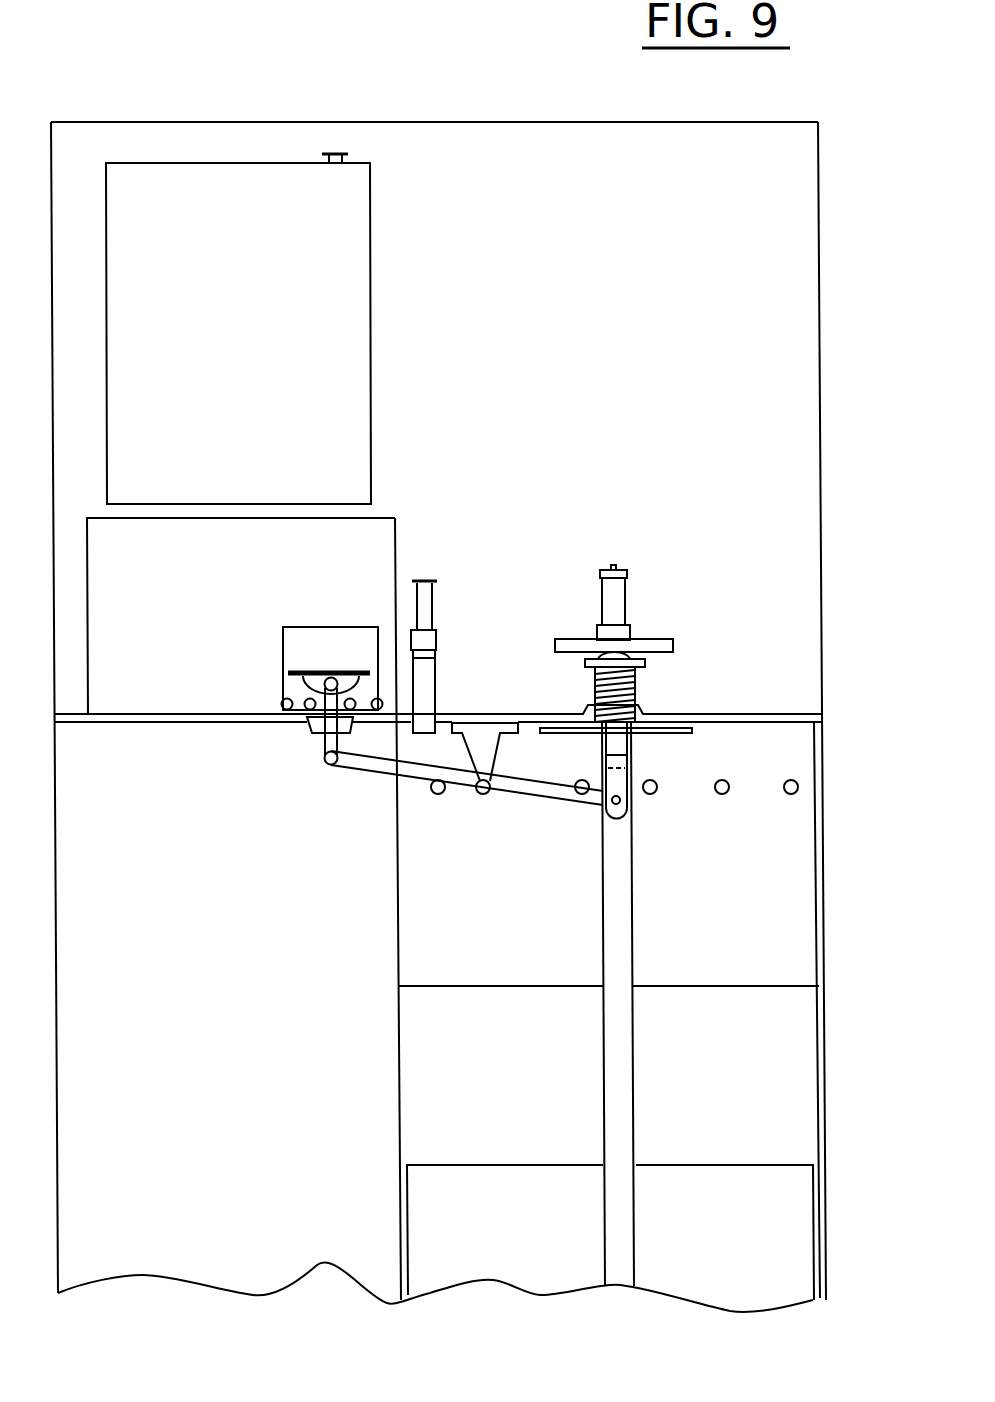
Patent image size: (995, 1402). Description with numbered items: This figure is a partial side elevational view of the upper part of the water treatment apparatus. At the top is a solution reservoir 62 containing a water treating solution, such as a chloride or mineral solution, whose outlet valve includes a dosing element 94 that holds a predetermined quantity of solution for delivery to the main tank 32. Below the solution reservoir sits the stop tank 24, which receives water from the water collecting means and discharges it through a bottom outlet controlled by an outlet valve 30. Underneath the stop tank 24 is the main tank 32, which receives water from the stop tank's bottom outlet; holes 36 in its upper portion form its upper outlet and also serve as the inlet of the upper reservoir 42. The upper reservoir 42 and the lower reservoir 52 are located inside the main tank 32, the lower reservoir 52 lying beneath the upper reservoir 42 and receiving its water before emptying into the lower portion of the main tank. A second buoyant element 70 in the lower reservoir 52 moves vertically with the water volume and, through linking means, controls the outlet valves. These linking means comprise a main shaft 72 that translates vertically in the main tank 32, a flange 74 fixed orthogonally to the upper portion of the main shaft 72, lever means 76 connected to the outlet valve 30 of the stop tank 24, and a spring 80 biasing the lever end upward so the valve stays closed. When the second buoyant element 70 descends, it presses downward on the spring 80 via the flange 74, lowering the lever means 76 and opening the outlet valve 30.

The stop tank 24 is at (385, 518).
The outlet valve 30 is at (320, 693).
The main tank 32 is at (822, 917).
The holes 36 is at (788, 795).
The upper reservoir 42 is at (504, 923).
The lower reservoir 52 is at (495, 1077).
The solution reservoir 62 is at (353, 252).
The second buoyant element 70 is at (800, 1200).
The main shaft 72 is at (623, 948).
The flange 74 is at (663, 640).
The lever means 76 is at (350, 762).
The spring 80 is at (600, 677).
The dosing element 94 is at (423, 590).